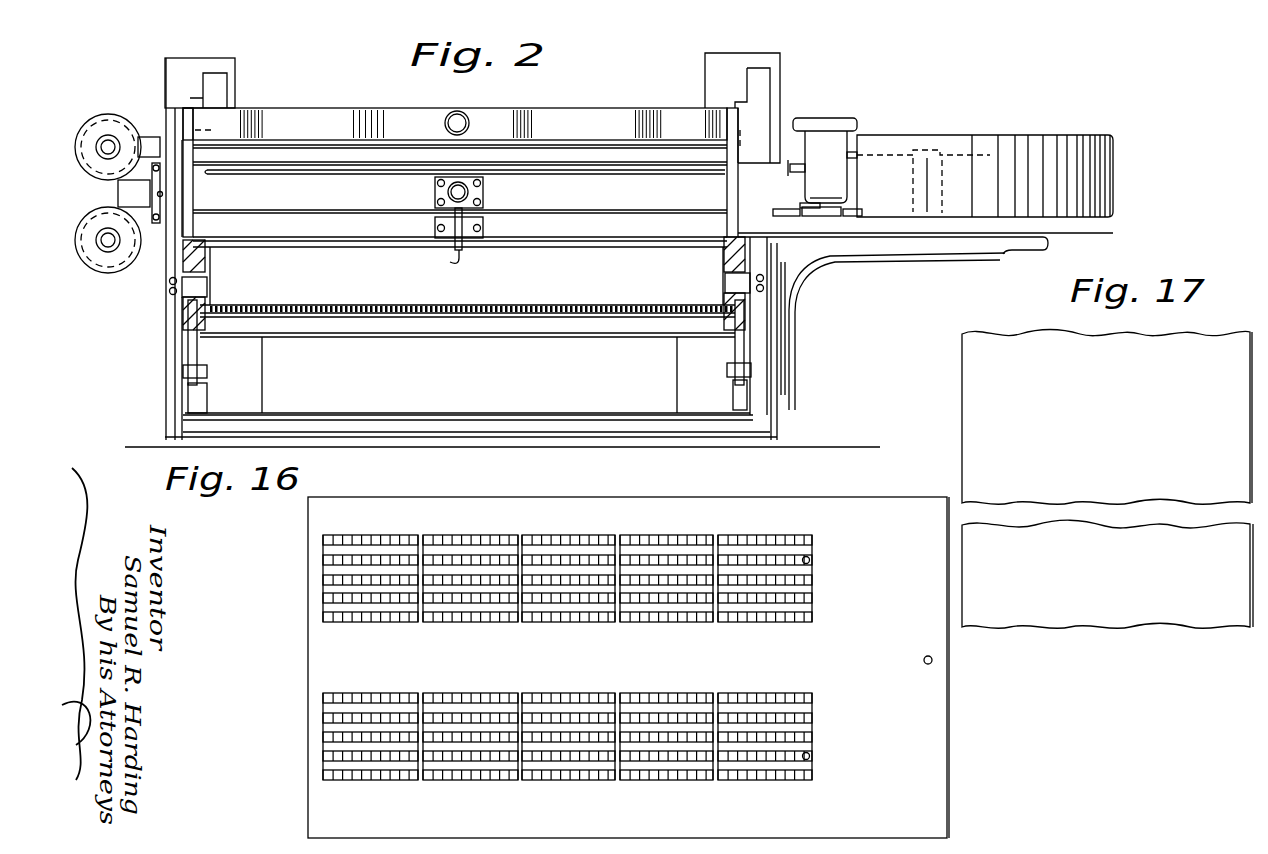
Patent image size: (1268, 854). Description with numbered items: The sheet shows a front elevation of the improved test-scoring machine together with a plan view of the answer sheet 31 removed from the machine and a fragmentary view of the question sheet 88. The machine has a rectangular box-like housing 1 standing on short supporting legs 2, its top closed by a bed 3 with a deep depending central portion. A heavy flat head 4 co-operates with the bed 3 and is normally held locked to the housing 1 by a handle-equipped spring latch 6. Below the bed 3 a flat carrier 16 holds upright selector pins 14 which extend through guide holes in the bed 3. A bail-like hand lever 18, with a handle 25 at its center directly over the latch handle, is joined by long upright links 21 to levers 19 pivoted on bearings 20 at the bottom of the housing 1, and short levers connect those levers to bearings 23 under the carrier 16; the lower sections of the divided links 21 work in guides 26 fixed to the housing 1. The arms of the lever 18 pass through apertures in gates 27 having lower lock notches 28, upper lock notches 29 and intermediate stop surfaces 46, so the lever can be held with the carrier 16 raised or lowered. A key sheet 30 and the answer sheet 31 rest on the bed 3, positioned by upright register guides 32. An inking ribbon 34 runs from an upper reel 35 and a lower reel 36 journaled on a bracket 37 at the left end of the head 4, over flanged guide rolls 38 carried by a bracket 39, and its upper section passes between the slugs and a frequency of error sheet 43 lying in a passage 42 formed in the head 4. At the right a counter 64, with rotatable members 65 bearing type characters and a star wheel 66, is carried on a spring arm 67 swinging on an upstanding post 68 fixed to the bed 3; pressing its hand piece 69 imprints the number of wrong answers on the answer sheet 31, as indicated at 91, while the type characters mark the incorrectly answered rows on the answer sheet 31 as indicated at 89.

In FIG. 2, the housing 1 is at (170, 366).
In FIG. 2, the supporting legs 2 is at (160, 446).
In FIG. 2, the bed 3 is at (375, 222).
In FIG. 2, the head 4 is at (392, 183).
In FIG. 2, the spring latch 6 is at (470, 190).
In FIG. 2, the selector pins 14 is at (465, 327).
In FIG. 2, the carrier 16 is at (378, 326).
In FIG. 2, the hand lever 18 is at (540, 108).
In FIG. 2, the levers 19 is at (208, 366).
In FIG. 2, the bearings 20 is at (208, 390).
In FIG. 2, the upright links 21 is at (195, 200).
In FIG. 2, the bearings 23 is at (185, 350).
In FIG. 2, the handle 25 is at (460, 110).
In FIG. 2, the guides 26 is at (207, 287).
In FIG. 2, the gates 27 is at (237, 64).
In FIG. 2, the lower lock notches 28 is at (200, 128).
In FIG. 2, the lock notches 29 is at (215, 82).
In FIG. 2, the key sheet 30 is at (632, 222).
In FIG. 2, the answer sheet 31 is at (592, 216).
In FIG. 16, the answer sheet 31 is at (904, 715).
In FIG. 2, the register guides 32 is at (778, 216).
In FIG. 2, the inking ribbon 34 is at (118, 177).
In FIG. 2, the upper reel 35 is at (128, 115).
In FIG. 2, the lower reel 36 is at (110, 273).
In FIG. 2, the bracket 37 is at (155, 135).
In FIG. 2, the flanged guide rolls 38 is at (150, 186).
In FIG. 2, the bracket 39 is at (161, 194).
In FIG. 2, the passage 42 is at (298, 176).
In FIG. 2, the frequency of error sheet 43 is at (338, 171).
In FIG. 2, the stop surfaces 46 is at (215, 135).
In FIG. 2, the counter 64 is at (848, 166).
In FIG. 2, the rotatable members 65 is at (800, 206).
In FIG. 2, the star wheel 66 is at (793, 172).
In FIG. 2, the spring arm 67 is at (878, 148).
In FIG. 2, the post 68 is at (912, 192).
In FIG. 2, the hand piece 69 is at (847, 118).
In FIG. 17, the question sheet 88 is at (962, 343).
In FIG. 16, the wrong answer imprints 89 is at (808, 534).
In FIG. 16, the counter imprint 91 is at (947, 663).